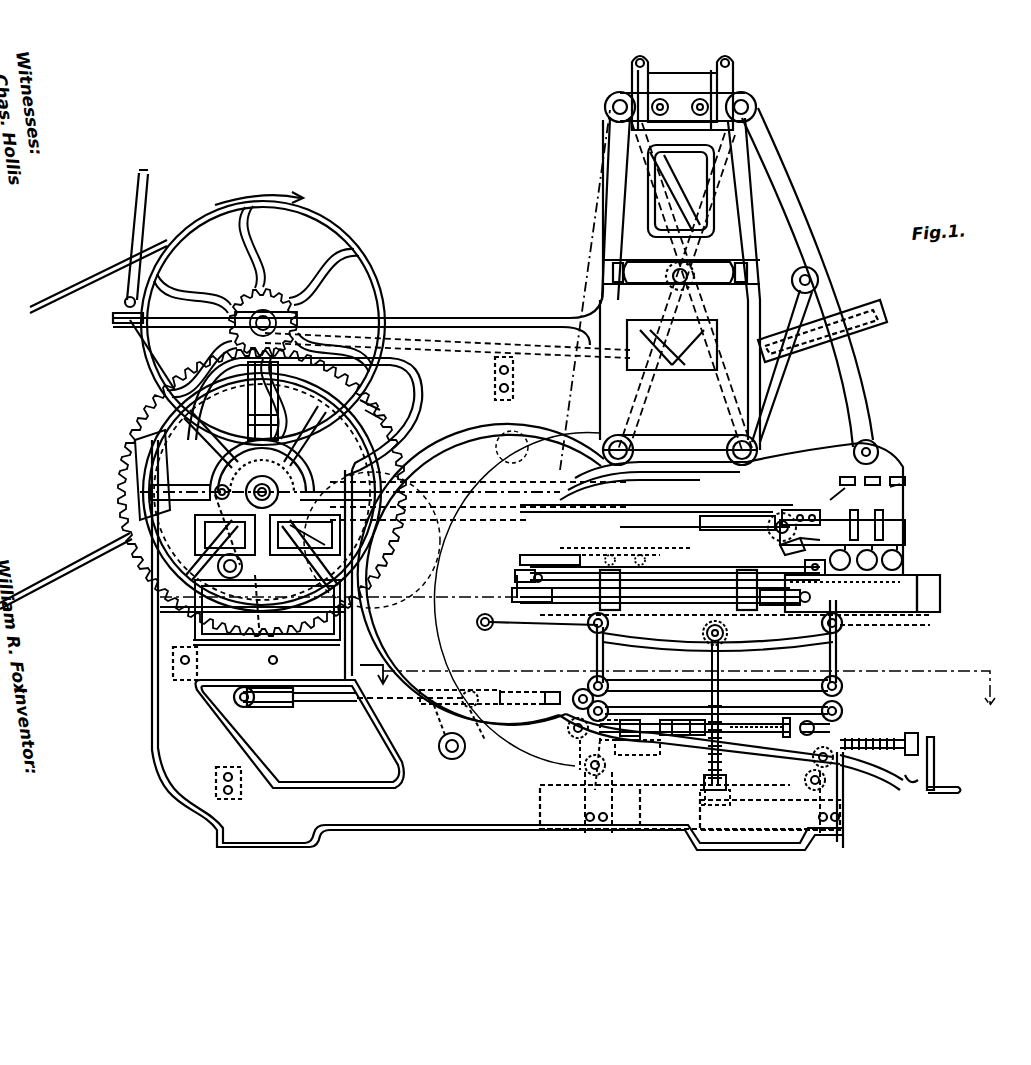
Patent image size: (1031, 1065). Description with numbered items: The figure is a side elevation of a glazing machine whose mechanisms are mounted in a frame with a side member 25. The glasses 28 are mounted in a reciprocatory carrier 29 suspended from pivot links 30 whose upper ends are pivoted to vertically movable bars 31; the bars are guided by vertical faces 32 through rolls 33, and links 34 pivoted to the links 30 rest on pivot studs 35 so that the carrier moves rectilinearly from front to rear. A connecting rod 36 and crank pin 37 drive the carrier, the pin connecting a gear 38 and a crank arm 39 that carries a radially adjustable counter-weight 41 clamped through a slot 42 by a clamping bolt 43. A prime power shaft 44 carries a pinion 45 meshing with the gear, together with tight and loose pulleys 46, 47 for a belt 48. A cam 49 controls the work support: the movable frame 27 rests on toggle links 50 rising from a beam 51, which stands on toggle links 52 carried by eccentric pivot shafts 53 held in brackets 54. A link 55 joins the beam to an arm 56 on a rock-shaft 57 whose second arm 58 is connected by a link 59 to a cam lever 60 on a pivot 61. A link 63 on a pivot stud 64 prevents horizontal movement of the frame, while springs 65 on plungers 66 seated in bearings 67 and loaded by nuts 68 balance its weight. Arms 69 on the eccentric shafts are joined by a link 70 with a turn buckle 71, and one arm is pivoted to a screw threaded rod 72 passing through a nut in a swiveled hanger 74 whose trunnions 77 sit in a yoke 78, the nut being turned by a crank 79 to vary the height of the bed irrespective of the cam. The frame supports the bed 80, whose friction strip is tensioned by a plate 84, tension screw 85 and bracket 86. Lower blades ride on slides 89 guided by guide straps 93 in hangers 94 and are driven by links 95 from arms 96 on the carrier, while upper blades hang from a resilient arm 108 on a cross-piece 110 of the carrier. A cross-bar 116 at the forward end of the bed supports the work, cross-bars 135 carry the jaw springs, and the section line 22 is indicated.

The section line 22 is at (681, 695).
The side member 25 is at (462, 312).
The movable frame 27 is at (778, 642).
The glasses 28 is at (900, 558).
The reciprocatory frame or carrier 29 is at (676, 545).
The pivot links 30 is at (665, 205).
The tie-rods or bars 31 is at (604, 105).
The vertical faces 32 is at (710, 78).
The rolls 33 is at (700, 98).
The links 34 is at (645, 390).
The pivot studs 35 is at (612, 438).
The connecting rod 36 is at (630, 492).
The crank pin 37 is at (390, 500).
The gear 38 is at (370, 418).
The crank arm 39 is at (320, 480).
The counter-weight 41 is at (150, 474).
The slot 42 is at (255, 573).
The clamping bolt 43 is at (182, 475).
The prime power shaft 44 is at (268, 318).
The pinion 45 is at (262, 305).
The tight pulley 46 is at (150, 360).
The loose pulley 47 is at (163, 347).
The belt 48 is at (92, 270).
The cam 49 is at (262, 492).
The toggle links 50 is at (603, 662).
The beam 51 is at (716, 660).
The toggle links 52 is at (840, 716).
The eccentric pivot shafts 53 is at (612, 778).
The brackets 54 is at (585, 797).
The link 55 is at (490, 688).
The arm 56 is at (483, 720).
The rock-shaft 57 is at (452, 760).
The second arm 58 is at (440, 700).
The link 59 is at (343, 702).
The cam lever 60 is at (233, 700).
The pivot 61 is at (218, 563).
The link 63 is at (560, 628).
The pivot stud 64 is at (487, 636).
The springs 65 is at (728, 780).
The rods or plungers 66 is at (720, 662).
The bearings 67 is at (698, 788).
The nuts or abutments 68 is at (722, 708).
The arm 69 is at (572, 750).
The link 70 is at (765, 725).
The turn buckle 71 is at (690, 718).
The screw threaded rod 72 is at (887, 738).
The swiveled hanger 74 is at (918, 737).
The trunnions 77 is at (922, 785).
The yoke or bracket 78 is at (880, 785).
The crank 79 is at (938, 776).
The bed or beam 80 is at (905, 618).
The plate 84 is at (556, 562).
The tension screw 85 is at (514, 572).
The bracket 86 is at (510, 590).
The slide or carriage 89 is at (790, 610).
The guide straps 93 is at (851, 593).
The brackets or hangers 94 is at (614, 612).
The link 95 is at (690, 600).
The arms 96 is at (734, 516).
The resilient arm 108 is at (800, 558).
The cross-piece 110 is at (778, 540).
The cross-bar 116 is at (940, 596).
The cross-bars 135 is at (865, 490).